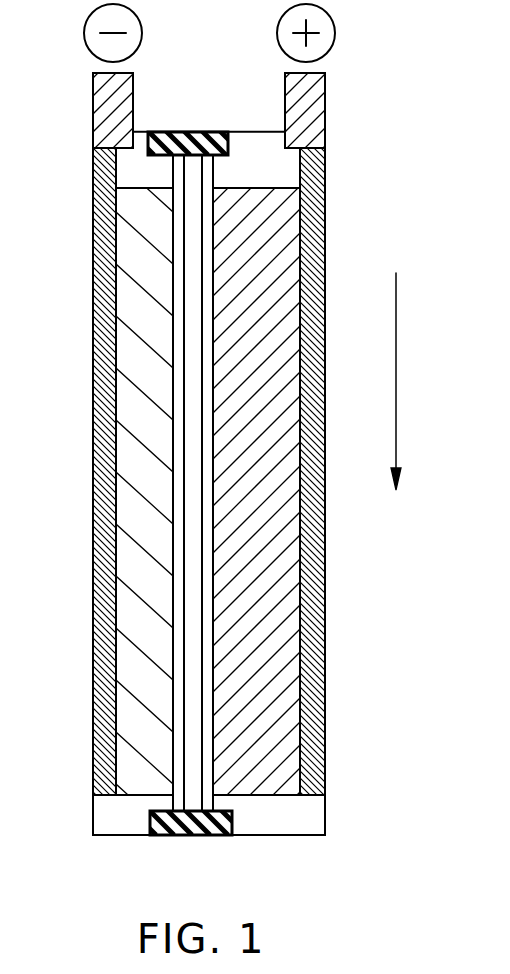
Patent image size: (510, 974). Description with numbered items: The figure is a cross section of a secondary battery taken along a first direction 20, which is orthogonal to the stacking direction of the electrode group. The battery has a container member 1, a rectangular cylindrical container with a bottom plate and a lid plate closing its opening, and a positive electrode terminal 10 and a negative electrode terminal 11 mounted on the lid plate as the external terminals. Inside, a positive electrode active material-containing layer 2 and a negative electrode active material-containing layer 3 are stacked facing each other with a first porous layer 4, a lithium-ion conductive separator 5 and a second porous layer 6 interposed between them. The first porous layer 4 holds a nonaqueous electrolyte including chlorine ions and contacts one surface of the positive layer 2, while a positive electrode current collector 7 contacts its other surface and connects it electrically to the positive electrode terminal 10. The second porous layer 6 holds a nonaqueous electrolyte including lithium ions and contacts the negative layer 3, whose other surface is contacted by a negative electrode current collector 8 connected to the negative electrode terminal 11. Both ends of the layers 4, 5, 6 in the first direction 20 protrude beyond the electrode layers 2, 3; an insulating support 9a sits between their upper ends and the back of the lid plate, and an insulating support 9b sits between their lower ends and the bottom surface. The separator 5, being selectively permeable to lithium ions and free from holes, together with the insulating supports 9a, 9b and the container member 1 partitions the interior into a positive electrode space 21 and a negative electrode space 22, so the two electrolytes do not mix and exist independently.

The container member 1 is at (93, 812).
The positive electrode active material-containing layer 2 is at (283, 387).
The negative electrode active material-containing layer 3 is at (148, 523).
The first porous layer 4 is at (210, 327).
The lithium-ion conductive separator 5 is at (195, 357).
The second porous layer 6 is at (180, 393).
The positive electrode current collector 7 is at (322, 250).
The negative electrode current collector 8 is at (100, 266).
The insulating support 9a is at (193, 133).
The insulating support 9b is at (201, 836).
The positive electrode terminal 10 is at (326, 108).
The negative electrode terminal 11 is at (93, 108).
The first direction 20 is at (408, 366).
The positive electrode space 21 is at (290, 165).
The negative electrode space 22 is at (124, 168).